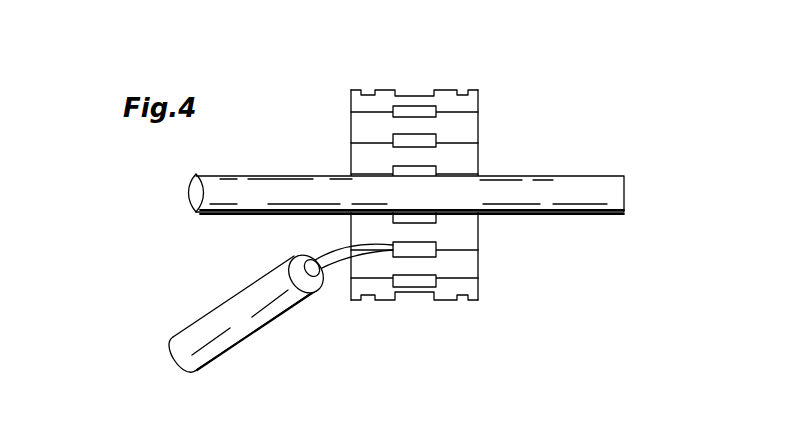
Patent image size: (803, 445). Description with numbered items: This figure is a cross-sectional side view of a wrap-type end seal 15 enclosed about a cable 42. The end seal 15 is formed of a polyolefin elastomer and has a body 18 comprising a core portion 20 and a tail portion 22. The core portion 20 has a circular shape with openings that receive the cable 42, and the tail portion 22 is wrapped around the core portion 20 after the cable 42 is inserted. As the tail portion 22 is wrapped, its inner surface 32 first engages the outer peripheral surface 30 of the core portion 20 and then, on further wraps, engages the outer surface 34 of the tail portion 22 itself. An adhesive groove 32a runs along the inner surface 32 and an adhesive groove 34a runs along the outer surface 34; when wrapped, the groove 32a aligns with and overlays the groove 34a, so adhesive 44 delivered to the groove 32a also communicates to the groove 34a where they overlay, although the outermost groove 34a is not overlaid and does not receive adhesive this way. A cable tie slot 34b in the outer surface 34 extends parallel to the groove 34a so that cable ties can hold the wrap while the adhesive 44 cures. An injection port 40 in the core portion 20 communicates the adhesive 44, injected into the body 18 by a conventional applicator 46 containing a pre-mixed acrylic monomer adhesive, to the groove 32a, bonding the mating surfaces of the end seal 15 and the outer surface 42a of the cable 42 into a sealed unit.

The end seal 15 is at (508, 63).
The body 18 is at (350, 286).
The core portion 20 is at (350, 155).
The tail portion 22 is at (350, 122).
The outer peripheral surface 30 is at (470, 250).
The inner surface 32 is at (453, 113).
The adhesive groove 32a is at (410, 284).
The outer surface 34 is at (478, 108).
The adhesive groove 34a is at (422, 93).
The cable tie slot 34b is at (597, 217).
The injection port 40 is at (392, 245).
The cable 42 is at (625, 185).
The outer surface of cable 42a is at (563, 183).
The adhesive 44 is at (223, 317).
The applicator 46 is at (245, 342).